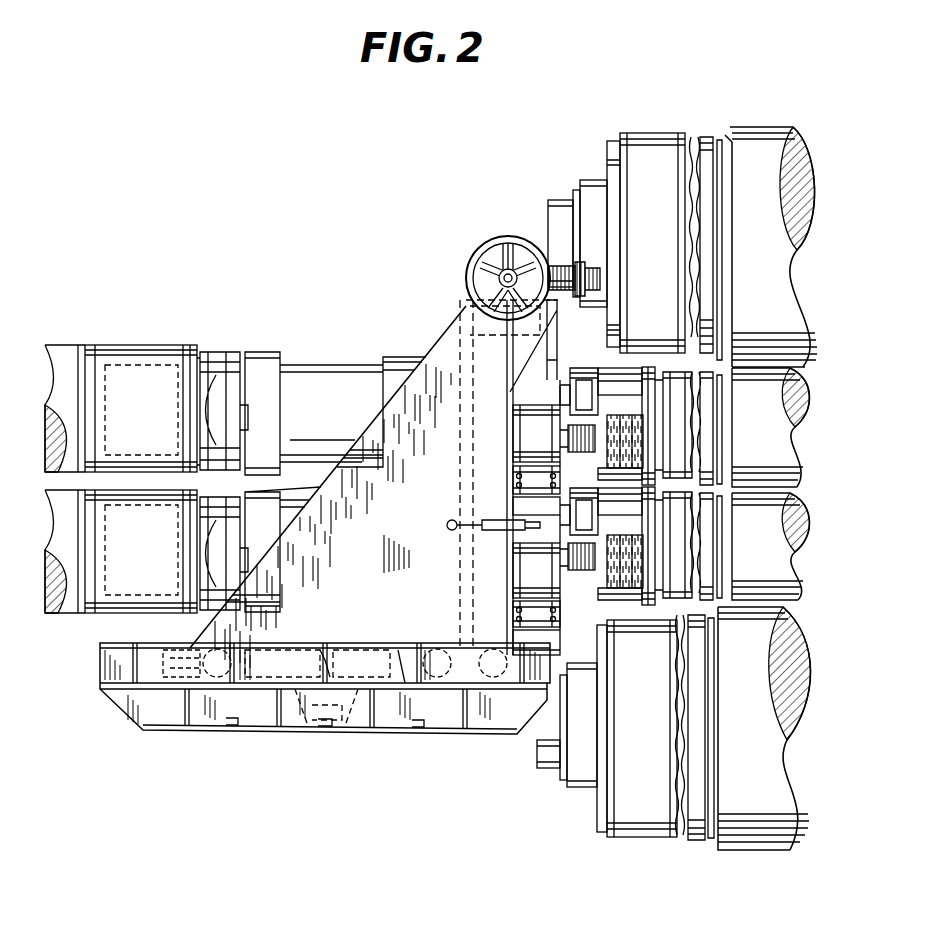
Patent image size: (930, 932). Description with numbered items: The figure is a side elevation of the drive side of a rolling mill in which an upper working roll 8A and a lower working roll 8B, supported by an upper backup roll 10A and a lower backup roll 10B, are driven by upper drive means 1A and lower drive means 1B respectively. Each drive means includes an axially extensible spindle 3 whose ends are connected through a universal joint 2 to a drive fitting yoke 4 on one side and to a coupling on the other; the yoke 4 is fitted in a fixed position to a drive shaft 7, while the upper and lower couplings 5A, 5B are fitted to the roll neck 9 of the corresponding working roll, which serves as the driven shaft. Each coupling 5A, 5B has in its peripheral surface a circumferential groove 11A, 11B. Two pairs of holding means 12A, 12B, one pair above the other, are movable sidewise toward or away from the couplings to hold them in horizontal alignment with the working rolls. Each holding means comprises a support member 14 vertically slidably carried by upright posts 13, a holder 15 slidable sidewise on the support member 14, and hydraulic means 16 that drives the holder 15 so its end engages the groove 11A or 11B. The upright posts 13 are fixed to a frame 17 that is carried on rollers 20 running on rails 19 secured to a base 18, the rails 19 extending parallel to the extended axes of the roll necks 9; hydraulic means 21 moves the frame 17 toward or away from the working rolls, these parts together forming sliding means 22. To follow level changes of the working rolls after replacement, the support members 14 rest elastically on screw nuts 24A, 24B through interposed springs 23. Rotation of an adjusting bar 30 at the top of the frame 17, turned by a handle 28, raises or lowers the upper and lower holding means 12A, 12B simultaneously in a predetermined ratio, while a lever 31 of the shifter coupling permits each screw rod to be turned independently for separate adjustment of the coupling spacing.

The upper drive means 1A is at (319, 352).
The lower drive means 1B is at (300, 494).
The universal joint 2 is at (216, 352).
The spindle 3 is at (352, 365).
The drive fitting yoke 4 is at (158, 345).
The upper coupling 5A is at (650, 366).
The lower coupling 5B is at (648, 620).
The drive shaft 7 is at (118, 362).
The upper working roll 8A is at (776, 447).
The lower working roll 8B is at (776, 566).
The roll neck 9 is at (612, 372).
The upper backup roll 10A is at (760, 127).
The lower backup roll 10B is at (757, 850).
The circumferential groove 11A is at (628, 366).
The circumferential groove 11B is at (620, 637).
The upper holding means 12A is at (528, 440).
The lower holding means 12B is at (533, 600).
The upright posts 13 is at (545, 356).
The support member 14 is at (513, 428).
The holder 15 is at (630, 418).
The hydraulic means 16 is at (568, 438).
The frame 17 is at (402, 489).
The base 18 is at (165, 718).
The rails 19 is at (402, 645).
The rollers 20 is at (210, 650).
The hydraulic means 21 is at (362, 650).
The sliding means 22 is at (301, 640).
The springs 23 is at (512, 480).
The upper screw nut 24A is at (513, 505).
The lower screw nut 24B is at (552, 636).
The handle 28 is at (490, 240).
The adjusting bar 30 is at (482, 280).
The lever 31 is at (447, 525).